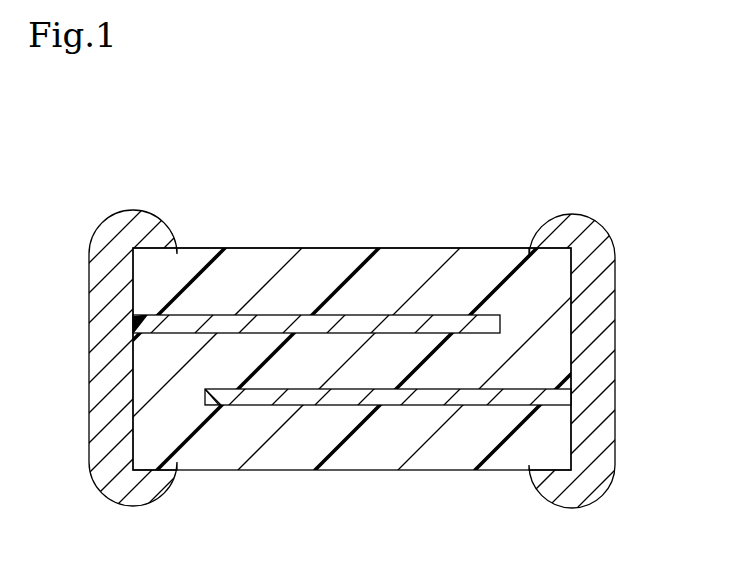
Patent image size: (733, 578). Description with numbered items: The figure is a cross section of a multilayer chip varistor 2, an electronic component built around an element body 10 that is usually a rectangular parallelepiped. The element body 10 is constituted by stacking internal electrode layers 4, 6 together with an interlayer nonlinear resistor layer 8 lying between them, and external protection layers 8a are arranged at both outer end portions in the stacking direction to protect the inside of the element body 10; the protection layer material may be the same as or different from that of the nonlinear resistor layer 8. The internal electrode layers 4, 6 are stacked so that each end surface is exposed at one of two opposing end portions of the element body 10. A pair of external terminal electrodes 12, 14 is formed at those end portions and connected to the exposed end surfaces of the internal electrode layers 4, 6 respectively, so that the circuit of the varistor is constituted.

The multilayer chip varistor 2 is at (331, 191).
The internal electrode layer 4 is at (442, 402).
The internal electrode layer 6 is at (283, 328).
The interlayer nonlinear resistor layer 8 is at (328, 390).
The external protection layer 8a is at (400, 282).
The element body 10 is at (480, 250).
The external terminal electrode 12 is at (110, 300).
The external terminal electrode 14 is at (598, 317).